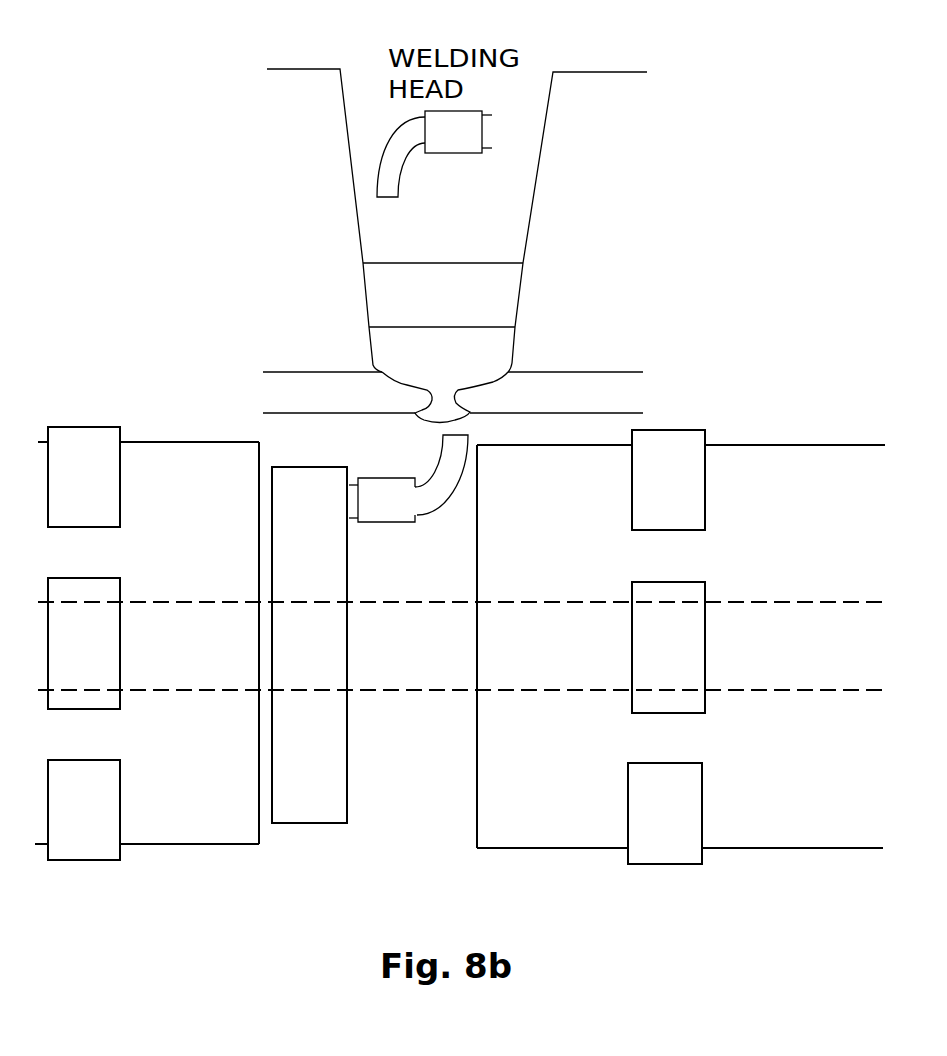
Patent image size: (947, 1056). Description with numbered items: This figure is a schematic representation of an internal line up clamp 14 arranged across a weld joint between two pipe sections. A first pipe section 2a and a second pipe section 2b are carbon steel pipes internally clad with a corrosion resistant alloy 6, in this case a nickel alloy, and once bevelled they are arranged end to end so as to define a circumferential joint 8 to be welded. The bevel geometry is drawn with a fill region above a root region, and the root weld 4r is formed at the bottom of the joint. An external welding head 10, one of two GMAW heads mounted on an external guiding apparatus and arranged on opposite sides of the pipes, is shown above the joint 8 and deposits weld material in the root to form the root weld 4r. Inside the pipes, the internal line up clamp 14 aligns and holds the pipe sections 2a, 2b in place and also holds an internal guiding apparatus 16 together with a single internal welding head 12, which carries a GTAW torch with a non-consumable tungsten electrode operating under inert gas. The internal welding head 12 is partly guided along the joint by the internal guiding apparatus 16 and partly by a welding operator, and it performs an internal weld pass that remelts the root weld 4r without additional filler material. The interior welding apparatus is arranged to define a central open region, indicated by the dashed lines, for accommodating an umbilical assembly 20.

The first pipe section 2a is at (323, 246).
The second pipe section 2b is at (617, 246).
The root weld 4r is at (403, 370).
The corrosion resistant alloy (CRA) 6 is at (610, 382).
The circumferential joint to be welded 8 is at (522, 127).
The external welding head 10 is at (460, 143).
The internal welding head 12 is at (392, 502).
The internal line up clamp 14 is at (769, 868).
The internal guiding apparatus 16 is at (308, 823).
The umbilical assembly 20 is at (435, 690).